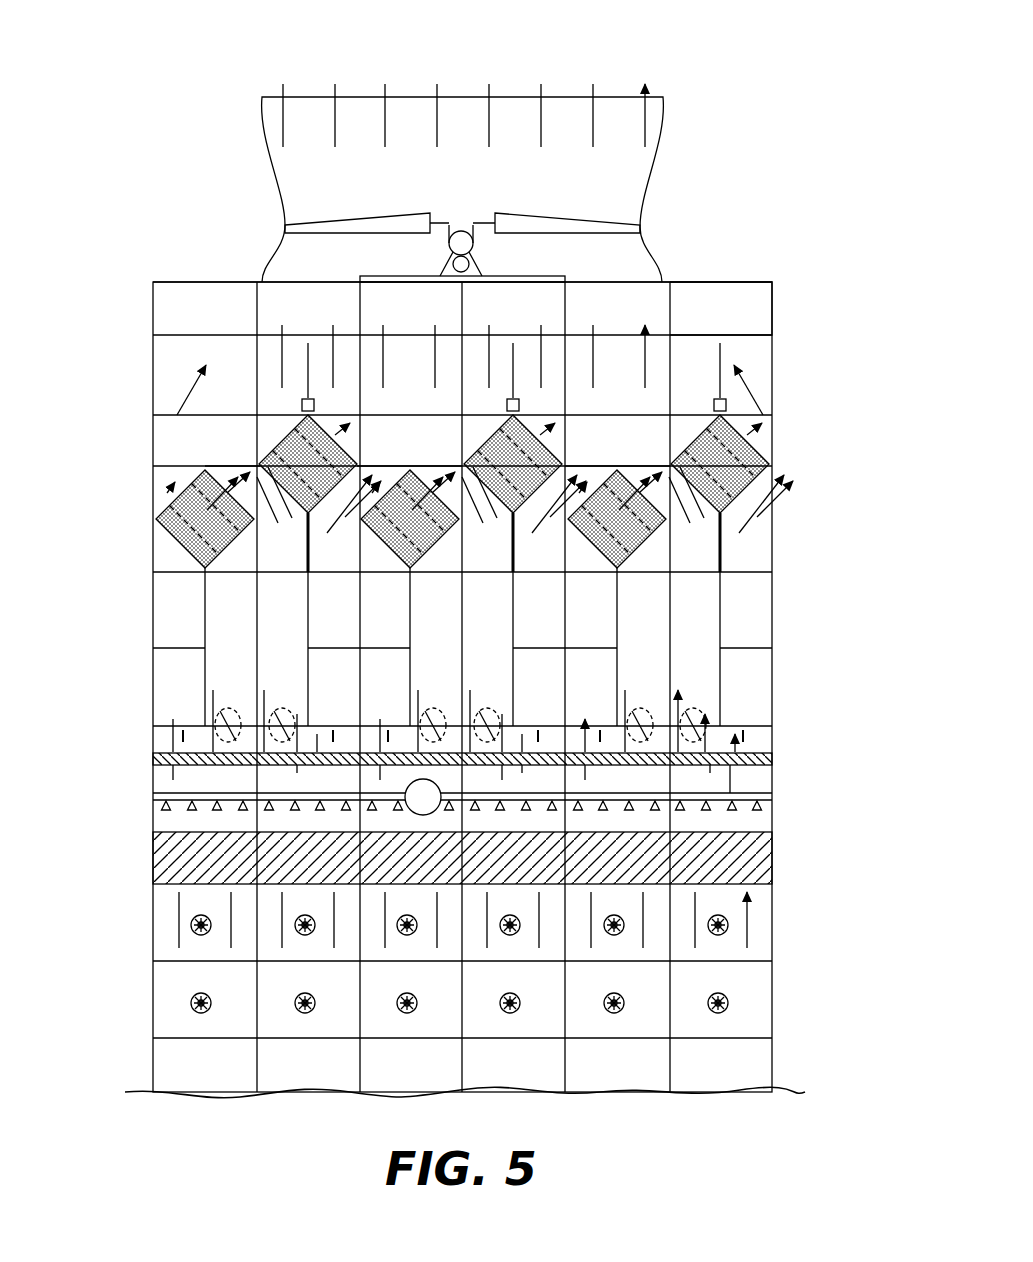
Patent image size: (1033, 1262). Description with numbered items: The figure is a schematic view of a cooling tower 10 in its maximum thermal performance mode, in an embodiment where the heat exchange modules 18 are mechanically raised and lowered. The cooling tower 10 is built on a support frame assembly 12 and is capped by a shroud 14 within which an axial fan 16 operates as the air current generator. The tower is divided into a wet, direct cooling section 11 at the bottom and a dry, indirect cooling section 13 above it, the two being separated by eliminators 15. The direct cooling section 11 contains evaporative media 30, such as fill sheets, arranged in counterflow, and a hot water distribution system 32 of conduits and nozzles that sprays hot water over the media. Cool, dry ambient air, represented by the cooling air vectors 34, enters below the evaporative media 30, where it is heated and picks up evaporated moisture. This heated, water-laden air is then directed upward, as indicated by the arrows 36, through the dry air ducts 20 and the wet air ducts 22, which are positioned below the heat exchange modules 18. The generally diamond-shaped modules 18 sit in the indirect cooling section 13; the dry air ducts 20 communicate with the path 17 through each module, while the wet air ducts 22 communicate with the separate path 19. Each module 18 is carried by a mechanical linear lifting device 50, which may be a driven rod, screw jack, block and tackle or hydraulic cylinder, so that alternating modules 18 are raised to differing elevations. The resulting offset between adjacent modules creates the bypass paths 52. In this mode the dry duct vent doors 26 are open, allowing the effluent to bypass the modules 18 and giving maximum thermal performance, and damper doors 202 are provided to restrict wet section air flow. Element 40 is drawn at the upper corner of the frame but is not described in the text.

The cooling tower 10 is at (676, 61).
The direct cooling section 11 is at (134, 945).
The support frame assembly 12 is at (731, 282).
The indirect cooling section 13 is at (116, 420).
The shroud 14 is at (664, 140).
The eliminators 15 is at (772, 756).
The axial fan 16 is at (520, 213).
The path 17 is at (286, 443).
The heat exchange module 18 is at (156, 516).
The path 19 is at (700, 447).
The dry air duct 20 is at (704, 623).
The wet air duct 22 is at (756, 623).
The dry duct vent door 26 is at (696, 722).
The evaporative media 30 is at (772, 858).
The hot water distribution system 32 is at (772, 797).
The cooling air vectors 34 is at (729, 1003).
The arrows 36 is at (177, 736).
The housing wall 40 is at (752, 300).
The mechanical linear lifting device 50 is at (314, 405).
The bypass path 52 is at (237, 466).
The damper door 202 is at (744, 730).